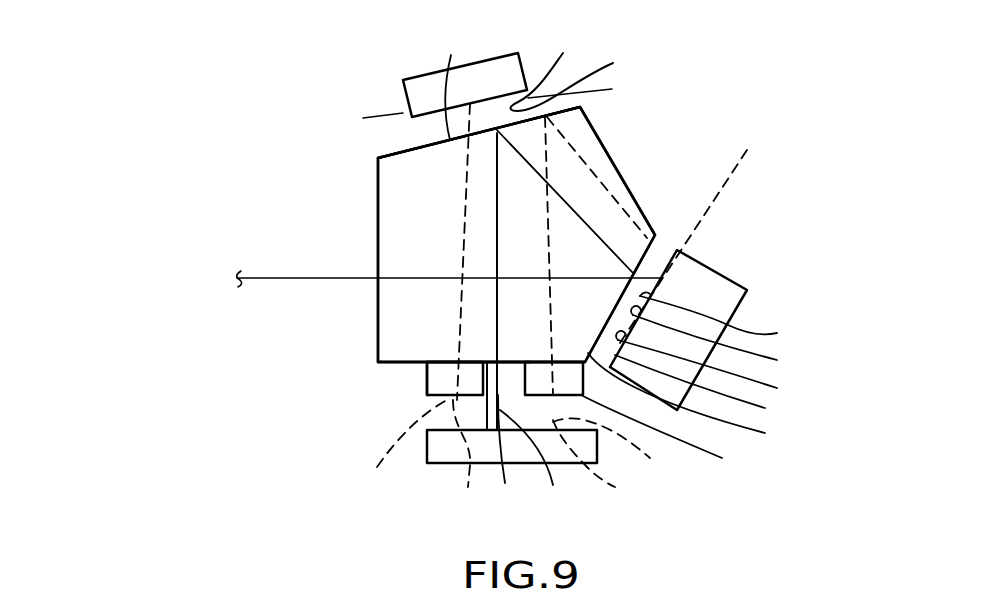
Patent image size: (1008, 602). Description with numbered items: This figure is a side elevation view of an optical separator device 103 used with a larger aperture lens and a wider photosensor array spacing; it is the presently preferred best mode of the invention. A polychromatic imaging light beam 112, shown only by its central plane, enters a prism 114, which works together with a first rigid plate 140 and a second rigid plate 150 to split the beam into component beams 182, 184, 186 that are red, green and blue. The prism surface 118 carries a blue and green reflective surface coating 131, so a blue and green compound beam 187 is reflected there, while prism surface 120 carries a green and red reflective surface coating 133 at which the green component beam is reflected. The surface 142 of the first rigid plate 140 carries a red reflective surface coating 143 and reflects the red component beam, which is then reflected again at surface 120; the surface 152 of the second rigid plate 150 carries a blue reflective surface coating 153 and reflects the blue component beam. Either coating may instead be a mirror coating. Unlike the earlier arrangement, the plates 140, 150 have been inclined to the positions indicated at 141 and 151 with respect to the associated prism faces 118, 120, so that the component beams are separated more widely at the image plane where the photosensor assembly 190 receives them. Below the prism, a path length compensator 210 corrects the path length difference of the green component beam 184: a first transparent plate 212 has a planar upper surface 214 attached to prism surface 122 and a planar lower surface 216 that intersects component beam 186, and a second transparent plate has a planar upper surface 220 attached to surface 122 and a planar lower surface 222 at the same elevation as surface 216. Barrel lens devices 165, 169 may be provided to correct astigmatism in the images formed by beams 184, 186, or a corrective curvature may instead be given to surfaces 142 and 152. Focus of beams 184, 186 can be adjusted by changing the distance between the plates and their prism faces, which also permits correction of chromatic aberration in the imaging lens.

The optical separator device 103 is at (240, 118).
The polychromatic imaging light beam 112 is at (292, 278).
The prism 114 is at (412, 180).
The prism surface 118 is at (712, 391).
The prism surface 120 is at (467, 82).
The prism surface 122 is at (385, 360).
The blue and green reflective surface coating 131 is at (732, 322).
The green and red reflective surface coating 133 is at (417, 143).
The first rigid plate 140 is at (753, 313).
The inclined position of first rigid plate 141 is at (740, 200).
The surface 142 is at (728, 342).
The red reflective surface coating 143 is at (720, 369).
The second rigid plate 150 is at (415, 77).
The inclined position of second rigid plate 151 is at (622, 89).
The surface 152 is at (559, 69).
The blue reflective surface coating 153 is at (592, 78).
The barrel lens device 165 is at (606, 467).
The barrel lens device 169 is at (390, 448).
The component beam 182 is at (626, 446).
The green component beam 184 is at (547, 462).
The component beam 186 is at (465, 457).
The blue and green compound beam 187 is at (553, 191).
The photosensor assembly 190 is at (425, 477).
The path length compensator 210 is at (411, 383).
The first transparent plate 212 is at (447, 382).
The planar upper surface 214 is at (463, 360).
The planar lower surface 216 is at (518, 455).
The planar upper surface 220 is at (703, 403).
The planar lower surface 222 is at (676, 437).